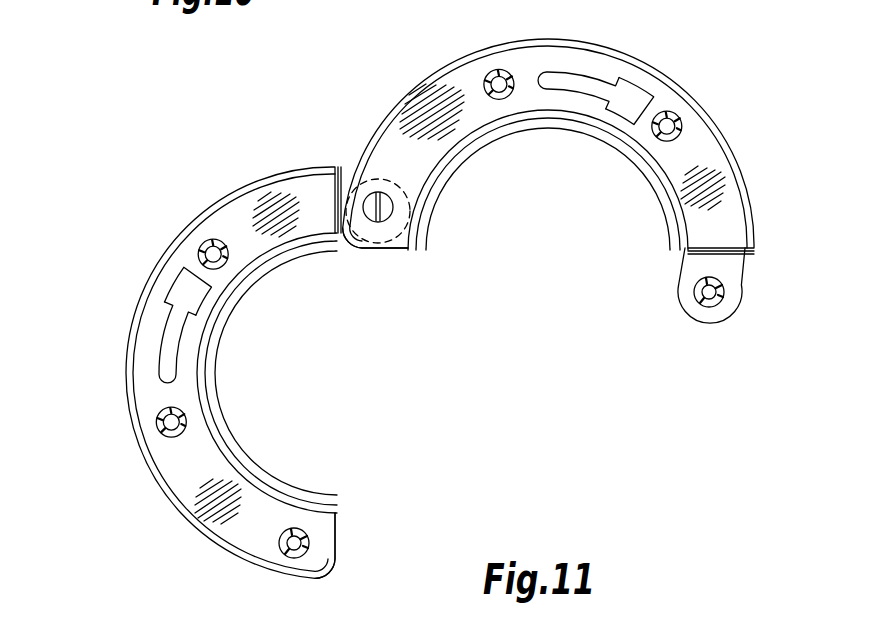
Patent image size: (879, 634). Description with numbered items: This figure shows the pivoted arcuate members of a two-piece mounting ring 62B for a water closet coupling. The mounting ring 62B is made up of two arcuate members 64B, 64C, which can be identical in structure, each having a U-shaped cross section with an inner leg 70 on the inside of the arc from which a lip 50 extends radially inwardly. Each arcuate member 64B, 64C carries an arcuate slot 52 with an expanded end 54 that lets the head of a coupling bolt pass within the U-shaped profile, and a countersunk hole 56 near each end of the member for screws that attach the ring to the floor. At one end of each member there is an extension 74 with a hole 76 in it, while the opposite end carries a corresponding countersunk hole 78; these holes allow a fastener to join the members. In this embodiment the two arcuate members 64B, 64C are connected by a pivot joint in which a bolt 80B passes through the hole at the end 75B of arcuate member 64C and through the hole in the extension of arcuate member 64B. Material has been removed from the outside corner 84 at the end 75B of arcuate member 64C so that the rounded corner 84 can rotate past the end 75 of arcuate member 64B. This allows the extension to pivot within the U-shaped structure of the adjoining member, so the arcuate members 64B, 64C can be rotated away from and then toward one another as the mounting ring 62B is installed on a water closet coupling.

The lip 50 is at (217, 388).
The arcuate slot 52 is at (161, 383).
The expanded end 54 is at (175, 288).
The hole 56 is at (204, 250).
The mounting ring 62B is at (333, 140).
The arcuate member 64B is at (158, 490).
The arcuate member 64C is at (753, 228).
The inner leg 70 is at (235, 456).
The extension 74 is at (685, 303).
The end 75 is at (339, 536).
The end 75B is at (384, 253).
The hole 76 is at (710, 307).
The countersunk hole 78 is at (288, 552).
The bolt 80B is at (392, 214).
The corner 84 is at (351, 252).